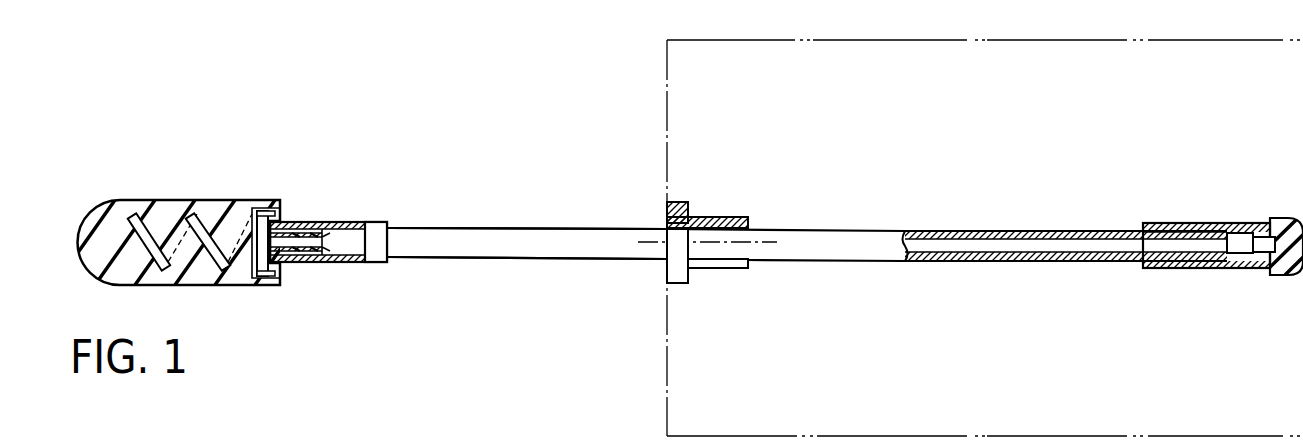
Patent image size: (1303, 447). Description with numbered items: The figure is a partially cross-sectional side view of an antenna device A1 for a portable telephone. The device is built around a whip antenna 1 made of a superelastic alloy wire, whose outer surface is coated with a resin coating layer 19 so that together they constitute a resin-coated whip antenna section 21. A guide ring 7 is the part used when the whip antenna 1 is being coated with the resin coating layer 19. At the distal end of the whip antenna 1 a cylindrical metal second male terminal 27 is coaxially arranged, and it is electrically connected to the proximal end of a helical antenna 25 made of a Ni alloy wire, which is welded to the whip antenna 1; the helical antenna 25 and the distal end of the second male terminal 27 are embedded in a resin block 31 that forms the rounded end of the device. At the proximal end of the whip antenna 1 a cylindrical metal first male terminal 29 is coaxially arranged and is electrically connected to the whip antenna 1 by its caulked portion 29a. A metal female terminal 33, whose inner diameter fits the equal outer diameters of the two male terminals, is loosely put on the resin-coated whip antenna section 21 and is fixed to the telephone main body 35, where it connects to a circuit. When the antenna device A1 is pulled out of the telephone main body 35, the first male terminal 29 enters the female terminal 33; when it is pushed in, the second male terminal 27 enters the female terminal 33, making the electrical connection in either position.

The whip antenna 1 is at (316, 236).
The guide ring 7 is at (300, 266).
The resin coating layer 19 is at (348, 258).
The resin-coated whip antenna section 21 is at (1018, 192).
The helical antenna 25 is at (197, 210).
The second male terminal 27 is at (357, 222).
The first male terminal 29 is at (1192, 223).
The caulked portion 29a is at (1240, 233).
The resin block 31 is at (240, 210).
The female terminal 33 is at (713, 217).
The telephone main body 35 is at (667, 305).
The antenna device A1 is at (562, 203).